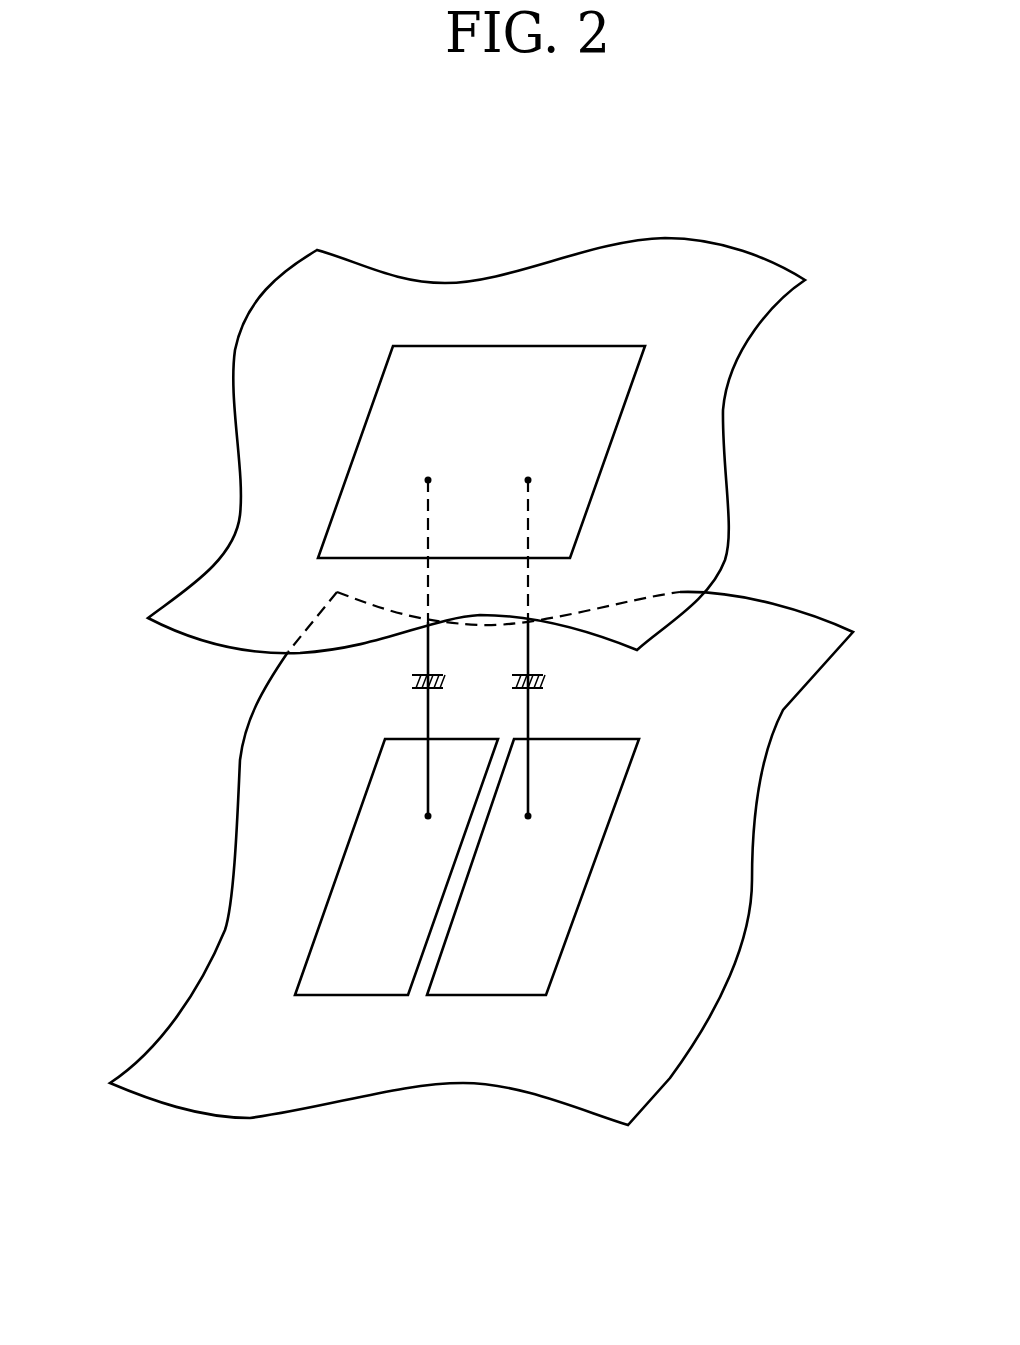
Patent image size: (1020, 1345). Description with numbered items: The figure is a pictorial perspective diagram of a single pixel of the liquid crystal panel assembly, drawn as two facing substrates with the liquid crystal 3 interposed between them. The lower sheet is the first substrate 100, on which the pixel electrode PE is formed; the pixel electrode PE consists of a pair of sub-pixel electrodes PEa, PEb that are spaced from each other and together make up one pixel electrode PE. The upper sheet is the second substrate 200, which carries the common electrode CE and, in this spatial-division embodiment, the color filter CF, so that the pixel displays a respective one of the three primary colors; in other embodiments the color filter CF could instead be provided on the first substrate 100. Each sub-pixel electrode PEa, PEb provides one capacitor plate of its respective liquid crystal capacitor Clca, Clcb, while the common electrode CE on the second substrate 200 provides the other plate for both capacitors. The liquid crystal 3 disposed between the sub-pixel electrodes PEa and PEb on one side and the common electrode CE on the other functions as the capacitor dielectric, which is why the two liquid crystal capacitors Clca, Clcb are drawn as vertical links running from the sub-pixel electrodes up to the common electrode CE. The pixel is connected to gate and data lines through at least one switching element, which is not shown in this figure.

The liquid crystal 3 is at (157, 755).
The second substrate 200 is at (506, 445).
The common electrode CE is at (732, 483).
The color filter CF is at (602, 480).
The first substrate 100 is at (772, 837).
The liquid crystal capacitor Clca is at (451, 648).
The liquid crystal capacitor Clcb is at (551, 648).
The pixel electrode PE is at (467, 989).
The sub-pixel electrode PEa is at (368, 995).
The sub-pixel electrode PEb is at (468, 995).